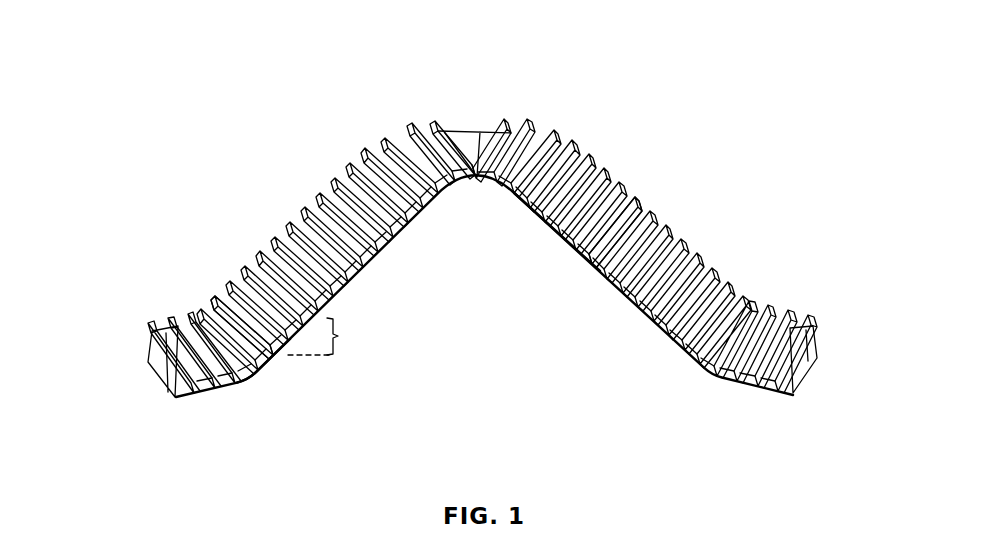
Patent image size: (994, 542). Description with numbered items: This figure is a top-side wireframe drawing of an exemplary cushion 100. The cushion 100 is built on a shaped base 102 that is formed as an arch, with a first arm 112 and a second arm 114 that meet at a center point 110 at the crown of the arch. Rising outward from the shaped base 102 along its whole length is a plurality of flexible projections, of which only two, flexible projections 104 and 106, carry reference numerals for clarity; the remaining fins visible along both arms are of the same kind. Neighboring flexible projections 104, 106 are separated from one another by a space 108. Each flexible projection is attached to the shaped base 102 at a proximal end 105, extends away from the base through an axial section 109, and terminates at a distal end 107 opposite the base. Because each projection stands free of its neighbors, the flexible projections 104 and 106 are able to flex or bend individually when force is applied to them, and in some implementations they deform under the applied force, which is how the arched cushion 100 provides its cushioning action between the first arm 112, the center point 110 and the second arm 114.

The cushion 100 is at (453, 212).
The shaped base 102 is at (417, 217).
The flexible projection 104 is at (482, 248).
The proximal end 105 is at (290, 356).
The flexible projection 106 is at (592, 208).
The distal end 107 is at (280, 307).
The space 108 is at (553, 230).
The axial section 109 is at (358, 336).
The center point 110 is at (481, 128).
The first arm 112 is at (163, 331).
The second arm 114 is at (806, 380).